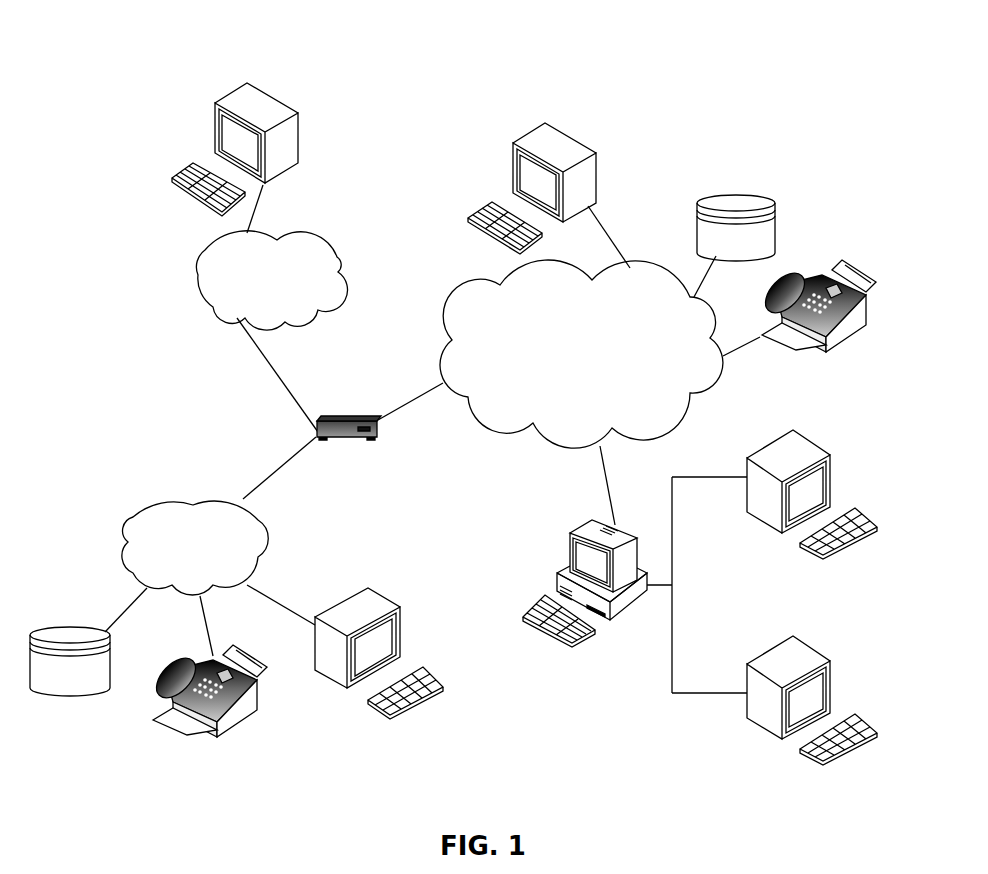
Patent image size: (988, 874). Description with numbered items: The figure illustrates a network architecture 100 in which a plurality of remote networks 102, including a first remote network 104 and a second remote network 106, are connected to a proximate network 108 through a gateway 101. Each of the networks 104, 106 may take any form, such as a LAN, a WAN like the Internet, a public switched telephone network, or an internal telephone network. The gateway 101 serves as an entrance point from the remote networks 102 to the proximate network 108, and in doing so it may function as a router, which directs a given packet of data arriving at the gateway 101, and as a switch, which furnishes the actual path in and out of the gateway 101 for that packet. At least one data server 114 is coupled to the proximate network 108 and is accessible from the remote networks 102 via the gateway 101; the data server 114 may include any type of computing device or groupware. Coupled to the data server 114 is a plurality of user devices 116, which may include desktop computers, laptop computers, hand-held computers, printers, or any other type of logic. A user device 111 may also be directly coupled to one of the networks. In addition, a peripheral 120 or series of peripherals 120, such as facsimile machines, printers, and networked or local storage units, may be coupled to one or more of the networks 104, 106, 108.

The network architecture 100 is at (148, 67).
The gateway 101 is at (333, 415).
The remote networks 102 is at (178, 341).
The first remote network 104 is at (126, 524).
The second remote network 106 is at (340, 252).
The proximate network 108 is at (688, 420).
The user device 111 is at (596, 155).
The data server 114 is at (569, 538).
The user devices 116 is at (298, 113).
The peripheral 120 is at (775, 204).